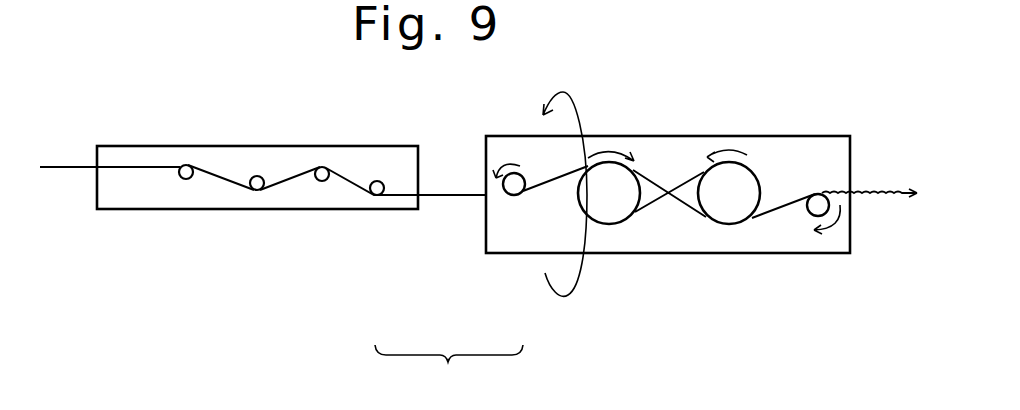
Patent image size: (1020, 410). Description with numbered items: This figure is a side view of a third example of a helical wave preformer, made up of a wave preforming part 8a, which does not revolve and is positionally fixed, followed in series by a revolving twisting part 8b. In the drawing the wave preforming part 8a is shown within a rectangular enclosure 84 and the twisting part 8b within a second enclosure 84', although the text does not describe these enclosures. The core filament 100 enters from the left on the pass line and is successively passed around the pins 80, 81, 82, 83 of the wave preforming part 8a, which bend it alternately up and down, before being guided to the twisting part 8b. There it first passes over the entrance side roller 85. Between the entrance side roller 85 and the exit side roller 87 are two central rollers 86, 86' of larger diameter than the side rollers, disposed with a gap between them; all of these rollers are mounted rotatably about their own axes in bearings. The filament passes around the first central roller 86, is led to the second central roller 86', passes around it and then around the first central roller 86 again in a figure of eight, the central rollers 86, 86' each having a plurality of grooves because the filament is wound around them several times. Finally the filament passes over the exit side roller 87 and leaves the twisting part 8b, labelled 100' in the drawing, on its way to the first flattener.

The core filament 100 is at (106, 121).
The pin 80 is at (186, 165).
The pin 81 is at (257, 176).
The pin 82 is at (322, 167).
The pin 83 is at (377, 181).
The first housing 84 is at (257, 213).
The entrance side roller 85 is at (514, 173).
The first central roller 86 is at (609, 150).
The second housing 84' is at (668, 158).
The second central roller 86' is at (746, 143).
The exit side roller 87 is at (807, 213).
The processed yarn (outgoing thread) 100' is at (877, 154).
The wave preforming part 8a is at (403, 210).
The twisting part 8b is at (523, 255).